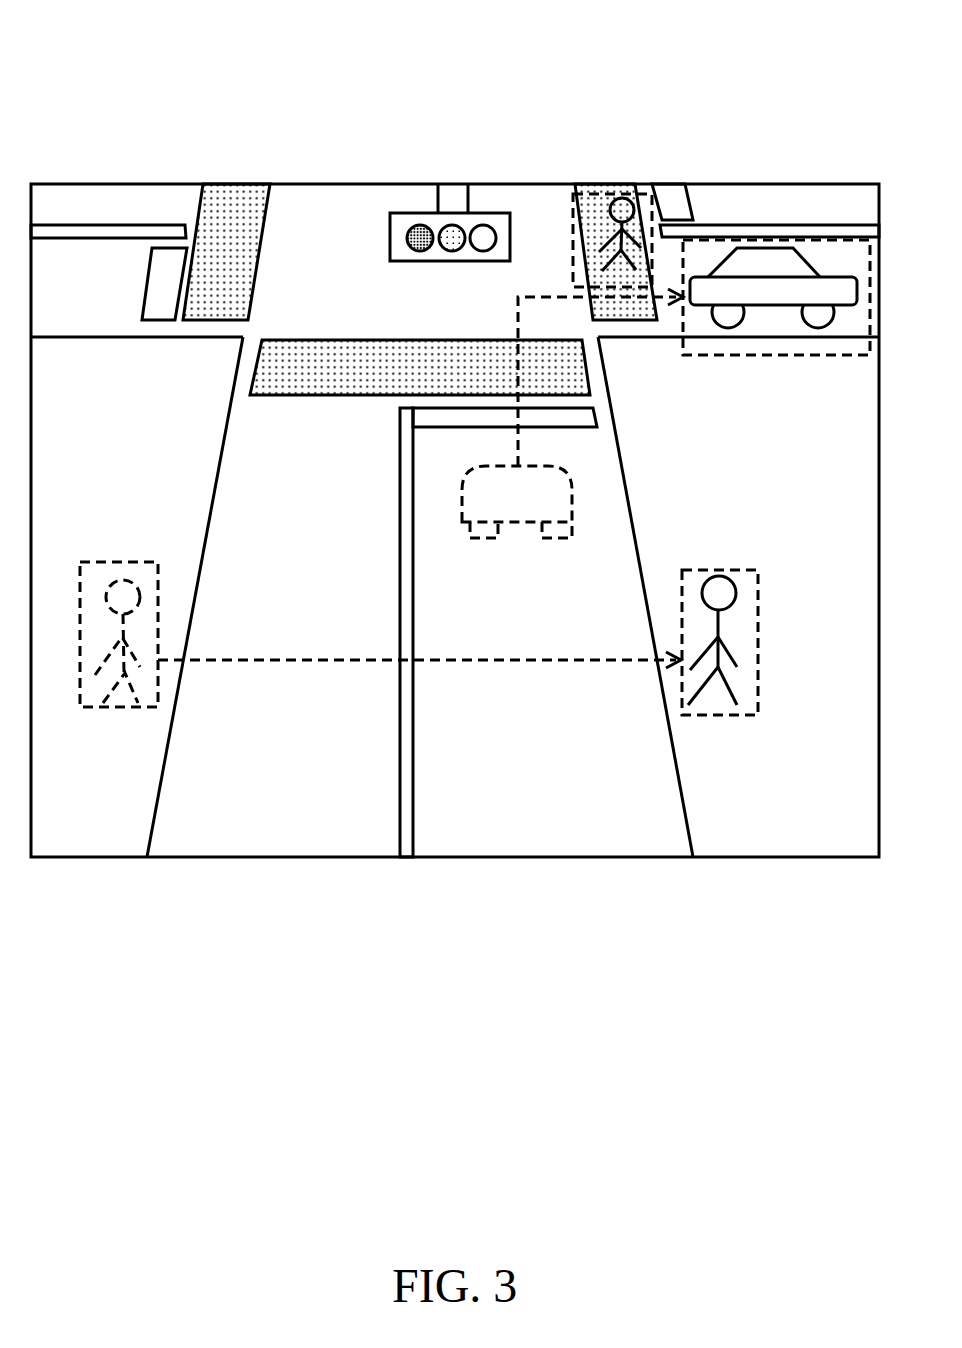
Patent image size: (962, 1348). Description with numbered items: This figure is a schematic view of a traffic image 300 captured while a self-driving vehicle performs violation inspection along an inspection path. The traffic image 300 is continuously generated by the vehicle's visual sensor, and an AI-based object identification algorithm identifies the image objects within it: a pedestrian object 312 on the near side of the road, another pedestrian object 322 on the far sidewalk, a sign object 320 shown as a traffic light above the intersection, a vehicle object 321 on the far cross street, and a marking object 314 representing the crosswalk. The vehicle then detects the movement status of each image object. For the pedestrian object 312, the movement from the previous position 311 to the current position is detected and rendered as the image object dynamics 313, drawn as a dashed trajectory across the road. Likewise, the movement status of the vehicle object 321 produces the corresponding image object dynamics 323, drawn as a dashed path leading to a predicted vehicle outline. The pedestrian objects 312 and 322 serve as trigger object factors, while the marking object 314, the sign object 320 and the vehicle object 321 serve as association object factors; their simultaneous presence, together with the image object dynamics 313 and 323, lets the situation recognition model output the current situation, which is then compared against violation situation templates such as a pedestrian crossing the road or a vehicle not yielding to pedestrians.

The traffic image 300 is at (593, 80).
The previous position 311 is at (122, 705).
The pedestrian object 312 is at (760, 672).
The image object dynamics 313 is at (447, 660).
The marking object 314 is at (348, 398).
The sign object 320 is at (389, 243).
The vehicle object 321 is at (795, 357).
The pedestrian object 322 is at (574, 258).
The image object dynamics 323 is at (517, 318).